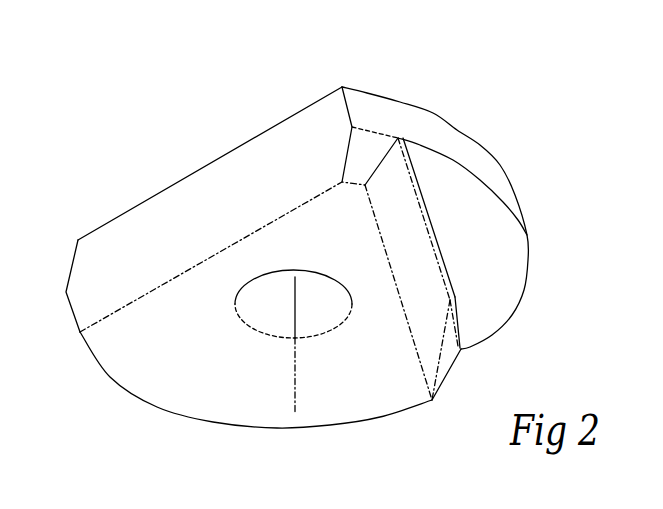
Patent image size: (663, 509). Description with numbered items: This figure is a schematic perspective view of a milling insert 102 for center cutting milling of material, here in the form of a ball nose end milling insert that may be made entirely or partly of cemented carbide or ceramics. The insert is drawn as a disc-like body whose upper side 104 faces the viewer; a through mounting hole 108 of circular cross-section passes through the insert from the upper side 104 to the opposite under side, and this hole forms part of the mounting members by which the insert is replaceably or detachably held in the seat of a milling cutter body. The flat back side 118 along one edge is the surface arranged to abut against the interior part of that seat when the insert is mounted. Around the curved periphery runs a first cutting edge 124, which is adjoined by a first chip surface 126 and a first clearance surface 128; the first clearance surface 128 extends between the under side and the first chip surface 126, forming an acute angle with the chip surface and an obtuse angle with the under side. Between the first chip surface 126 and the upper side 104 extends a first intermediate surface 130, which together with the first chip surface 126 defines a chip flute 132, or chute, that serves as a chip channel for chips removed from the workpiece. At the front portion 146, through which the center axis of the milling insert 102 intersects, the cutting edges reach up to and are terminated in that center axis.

The milling insert 102 is at (124, 106).
The upper side 104 is at (140, 365).
The mounting hole 108 is at (268, 300).
The back side 118 is at (250, 185).
The first cutting edge 124 is at (527, 235).
The first chip surface 126 is at (453, 200).
The first clearance surface 128 is at (432, 130).
The first intermediate surface 130 is at (385, 182).
The chip flute 132 is at (468, 358).
The front portion 146 is at (487, 352).